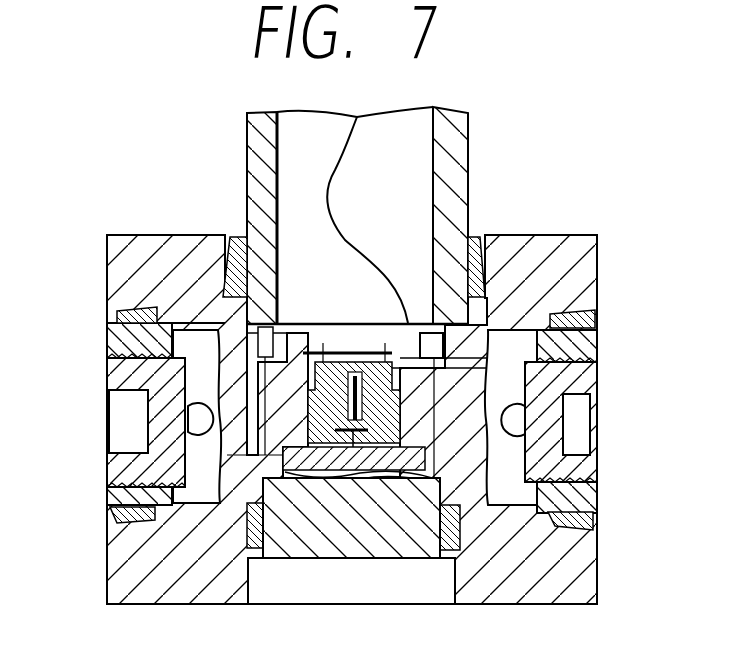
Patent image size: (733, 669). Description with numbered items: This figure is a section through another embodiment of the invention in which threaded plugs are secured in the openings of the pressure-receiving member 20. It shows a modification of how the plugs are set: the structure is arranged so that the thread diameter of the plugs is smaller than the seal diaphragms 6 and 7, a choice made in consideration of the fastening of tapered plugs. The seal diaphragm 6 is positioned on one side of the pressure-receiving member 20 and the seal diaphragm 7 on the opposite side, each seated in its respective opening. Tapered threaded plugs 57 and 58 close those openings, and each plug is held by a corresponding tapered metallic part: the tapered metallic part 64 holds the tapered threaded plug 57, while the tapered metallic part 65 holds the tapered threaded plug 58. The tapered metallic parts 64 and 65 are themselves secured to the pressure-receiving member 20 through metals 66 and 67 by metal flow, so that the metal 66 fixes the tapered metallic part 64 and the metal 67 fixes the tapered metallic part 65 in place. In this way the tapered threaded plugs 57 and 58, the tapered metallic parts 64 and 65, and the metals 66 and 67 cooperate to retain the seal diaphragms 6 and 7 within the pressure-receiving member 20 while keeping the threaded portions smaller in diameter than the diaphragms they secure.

The pressure-receiving member 20 is at (597, 263).
The metal 66 is at (110, 318).
The tapered metallic part 64 is at (110, 343).
The seal diaphragm 6 is at (187, 443).
The tapered threaded plug 57 is at (110, 470).
The metal 67 is at (597, 322).
The tapered threaded plug 58 is at (585, 377).
The seal diaphragm 7 is at (487, 473).
The tapered metallic part 65 is at (597, 497).